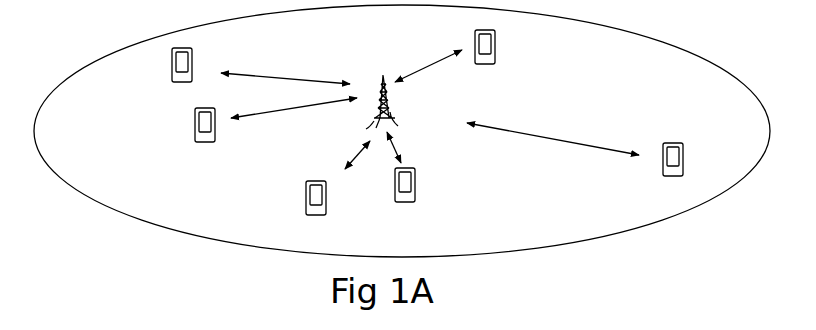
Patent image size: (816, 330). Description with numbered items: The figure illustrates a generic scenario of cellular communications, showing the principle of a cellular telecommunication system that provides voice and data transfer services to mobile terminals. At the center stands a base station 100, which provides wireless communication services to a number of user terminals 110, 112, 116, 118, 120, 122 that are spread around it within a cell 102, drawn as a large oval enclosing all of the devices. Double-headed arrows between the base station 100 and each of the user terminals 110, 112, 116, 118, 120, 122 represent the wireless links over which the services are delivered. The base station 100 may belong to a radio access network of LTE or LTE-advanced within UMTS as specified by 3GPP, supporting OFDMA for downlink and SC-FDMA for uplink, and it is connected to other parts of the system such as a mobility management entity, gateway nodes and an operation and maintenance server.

The base station 100 is at (394, 122).
The cell 102 is at (313, 41).
The user terminal 110 is at (192, 52).
The user terminal 112 is at (215, 136).
The user terminal 116 is at (415, 196).
The user terminal 118 is at (683, 168).
The user terminal 120 is at (495, 58).
The user terminal 122 is at (326, 209).